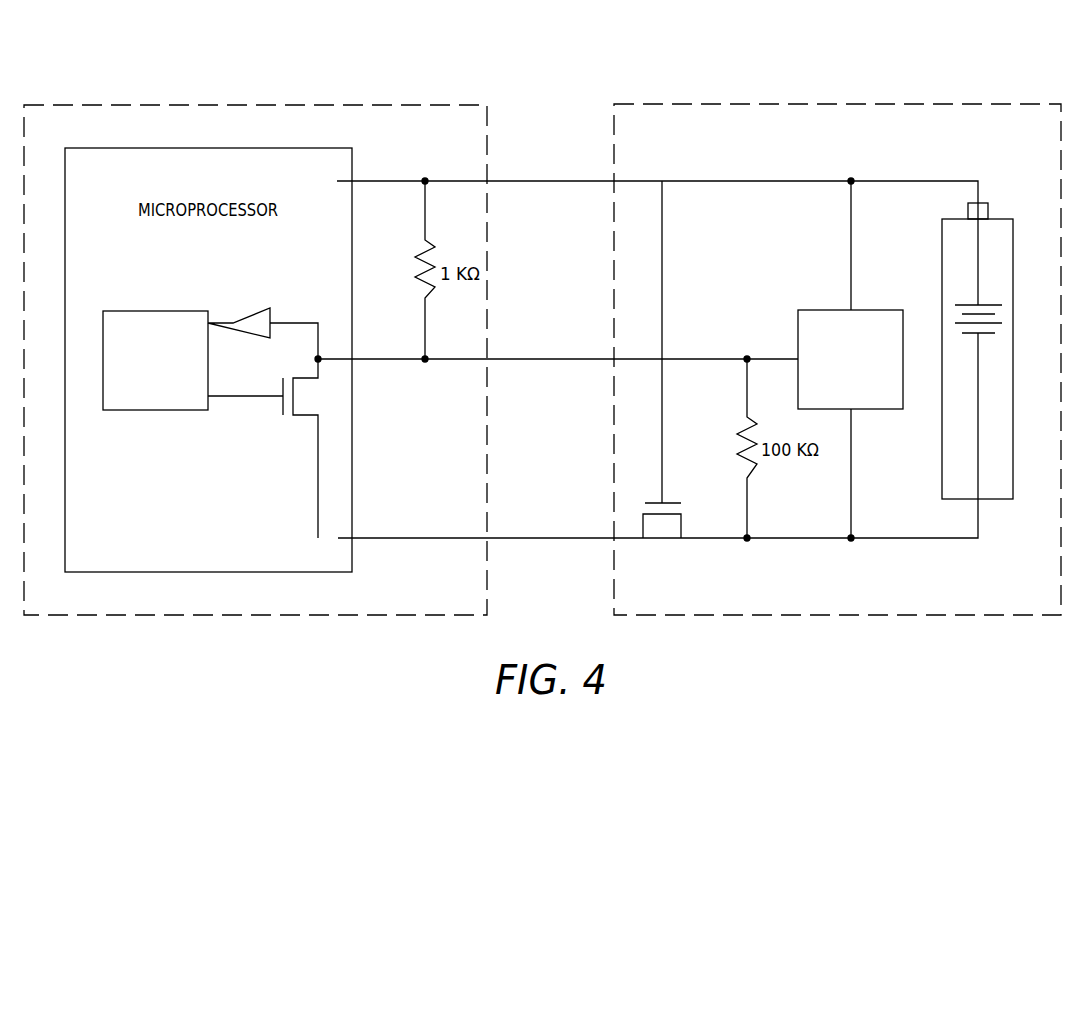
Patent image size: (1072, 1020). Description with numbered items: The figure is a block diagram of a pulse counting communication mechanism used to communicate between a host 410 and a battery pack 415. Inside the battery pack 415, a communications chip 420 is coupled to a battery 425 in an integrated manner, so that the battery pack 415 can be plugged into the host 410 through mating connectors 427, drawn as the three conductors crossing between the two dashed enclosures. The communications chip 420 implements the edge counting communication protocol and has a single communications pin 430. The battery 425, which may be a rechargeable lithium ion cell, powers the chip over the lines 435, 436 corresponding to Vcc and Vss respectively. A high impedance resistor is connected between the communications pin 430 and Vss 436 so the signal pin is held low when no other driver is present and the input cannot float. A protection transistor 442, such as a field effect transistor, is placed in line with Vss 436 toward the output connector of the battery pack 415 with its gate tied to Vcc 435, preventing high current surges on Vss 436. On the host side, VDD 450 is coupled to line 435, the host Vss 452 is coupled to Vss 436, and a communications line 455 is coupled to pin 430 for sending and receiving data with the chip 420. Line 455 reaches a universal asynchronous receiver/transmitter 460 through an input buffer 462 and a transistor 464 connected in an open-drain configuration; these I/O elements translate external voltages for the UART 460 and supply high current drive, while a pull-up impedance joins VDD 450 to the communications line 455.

The host 410 is at (272, 105).
The battery pack 415 is at (852, 104).
The communications chip 420 is at (866, 310).
The battery 425 is at (1008, 219).
The mating connectors 427 is at (505, 538).
The communications pin 430 is at (783, 357).
The Vcc line 435 is at (912, 181).
The Vss line 436 is at (912, 538).
The protection transistor 442 is at (686, 524).
The VDD 450 is at (338, 183).
The Vss 452 is at (338, 540).
The communications line 455 is at (340, 359).
The universal asynchronous receiver/transmitter (UART) 460 is at (155, 311).
The input buffer 462 is at (255, 308).
The transistor 464 is at (282, 408).